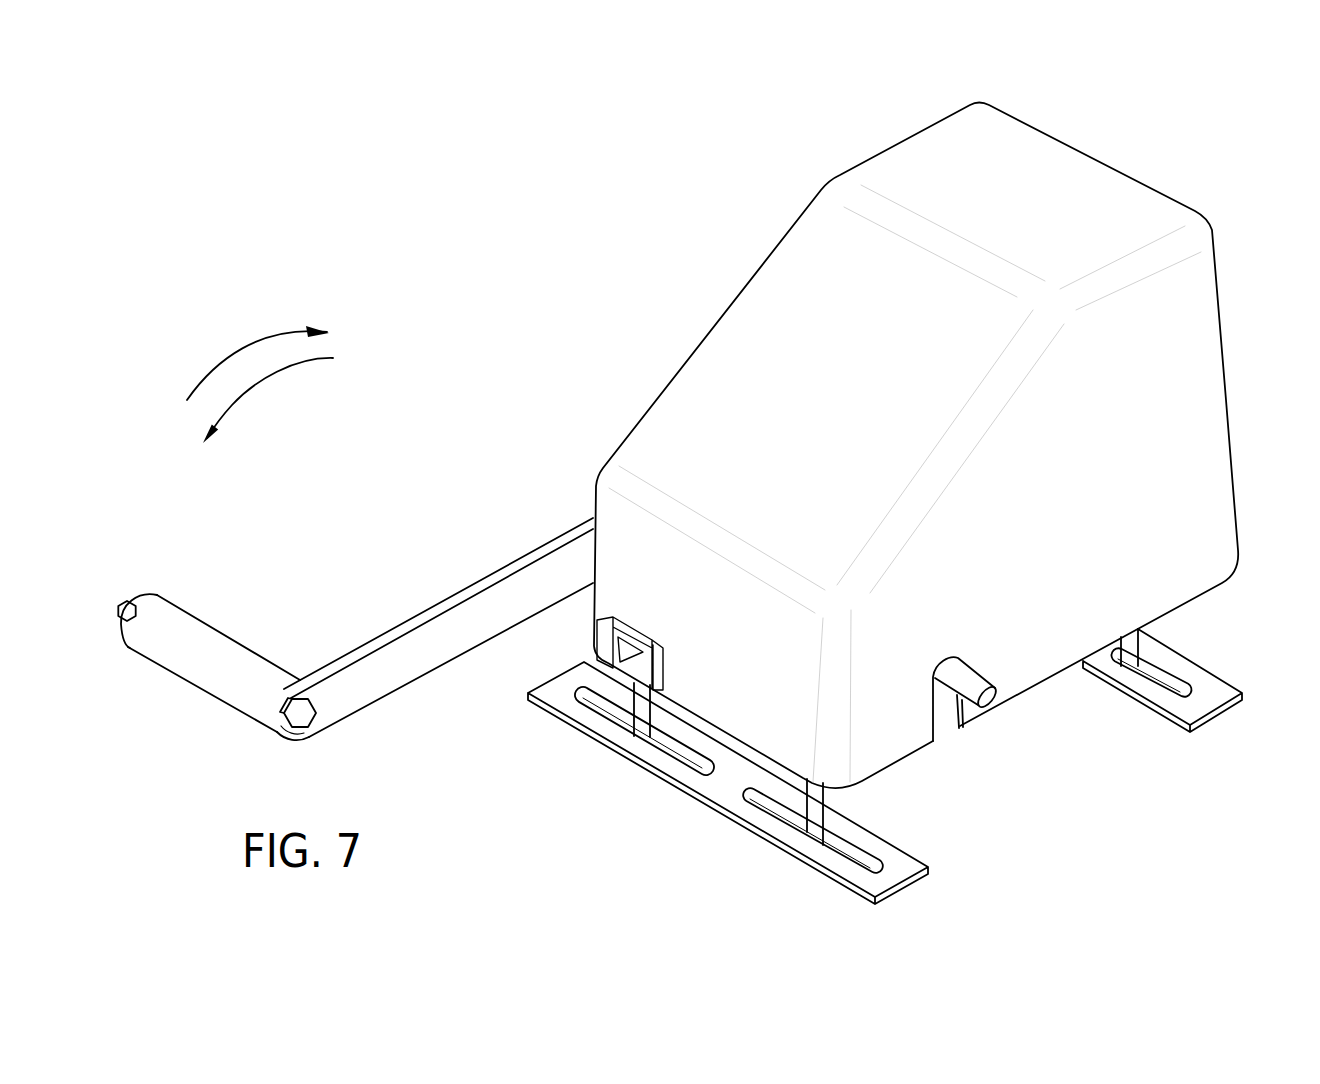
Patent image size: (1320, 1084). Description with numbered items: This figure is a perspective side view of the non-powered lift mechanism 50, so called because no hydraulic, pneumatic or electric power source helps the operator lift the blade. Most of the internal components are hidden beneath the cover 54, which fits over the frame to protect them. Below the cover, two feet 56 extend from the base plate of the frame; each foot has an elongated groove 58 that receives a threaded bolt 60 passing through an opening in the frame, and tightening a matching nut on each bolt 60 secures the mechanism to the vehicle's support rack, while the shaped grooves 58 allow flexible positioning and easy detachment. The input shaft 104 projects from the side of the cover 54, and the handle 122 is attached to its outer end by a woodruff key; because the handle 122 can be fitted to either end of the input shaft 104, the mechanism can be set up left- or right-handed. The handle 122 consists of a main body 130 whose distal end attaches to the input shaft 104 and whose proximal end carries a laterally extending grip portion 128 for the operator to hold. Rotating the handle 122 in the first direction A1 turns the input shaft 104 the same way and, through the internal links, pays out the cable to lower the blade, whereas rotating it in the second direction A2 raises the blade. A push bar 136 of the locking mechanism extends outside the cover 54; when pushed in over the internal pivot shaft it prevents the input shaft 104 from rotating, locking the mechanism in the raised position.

The non-powered lift mechanism 50 is at (535, 305).
The cover 54 is at (883, 170).
The foot 56 is at (903, 873).
The groove 58 is at (587, 690).
The threaded bolt 60 is at (642, 717).
The input shaft 104 is at (972, 693).
The handle 122 is at (373, 643).
The grip portion 128 is at (167, 650).
The main body 130 is at (457, 593).
The push bar 136 is at (565, 628).
The first direction A1 is at (244, 342).
The second direction A2 is at (263, 370).